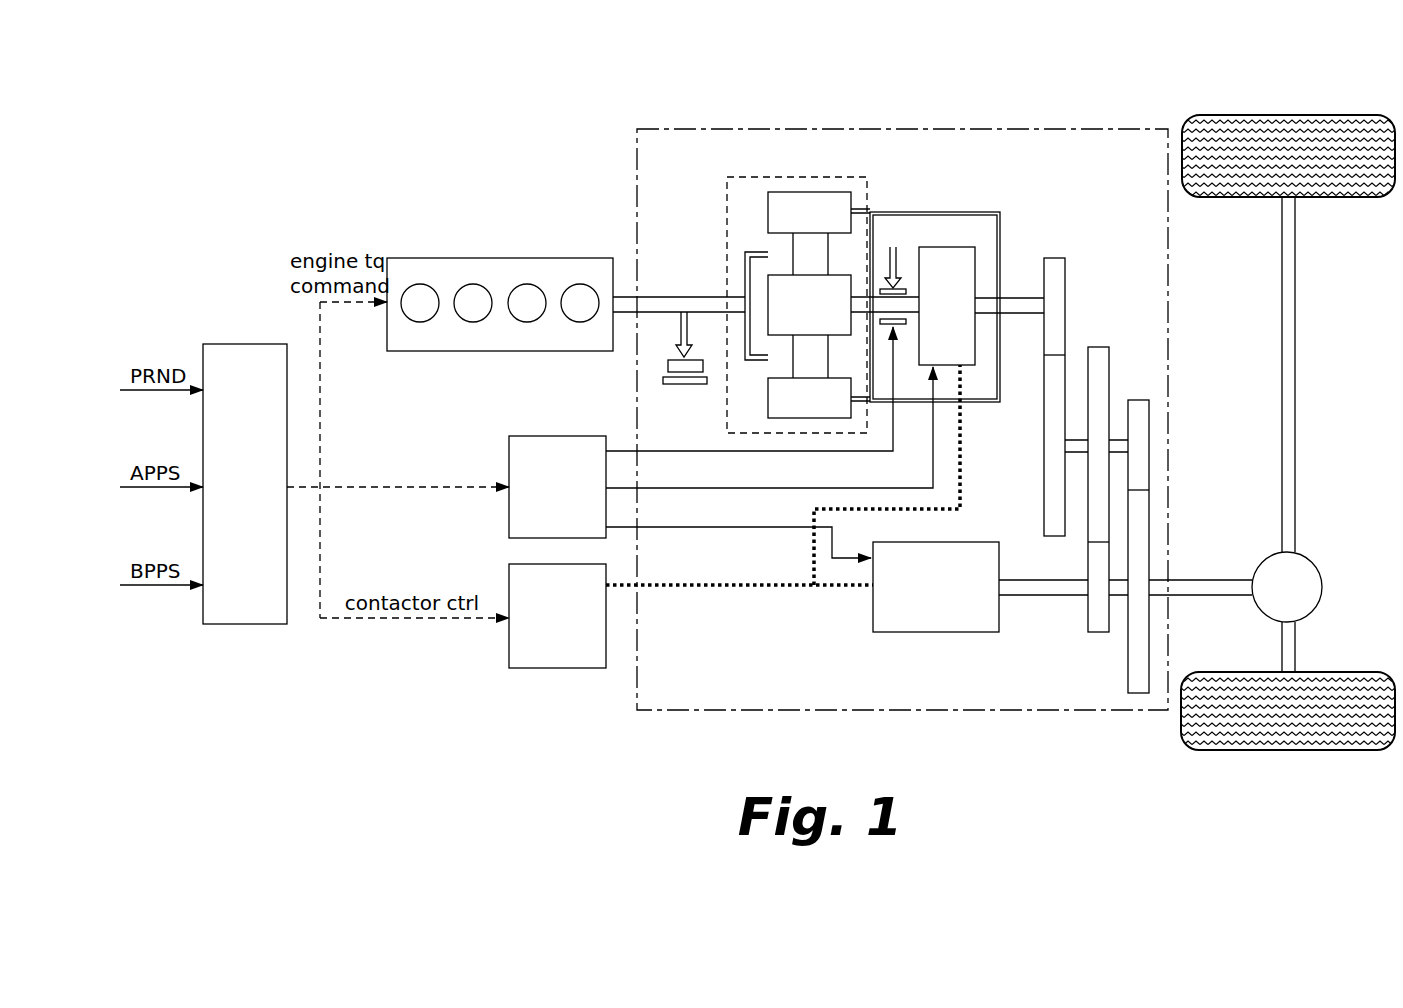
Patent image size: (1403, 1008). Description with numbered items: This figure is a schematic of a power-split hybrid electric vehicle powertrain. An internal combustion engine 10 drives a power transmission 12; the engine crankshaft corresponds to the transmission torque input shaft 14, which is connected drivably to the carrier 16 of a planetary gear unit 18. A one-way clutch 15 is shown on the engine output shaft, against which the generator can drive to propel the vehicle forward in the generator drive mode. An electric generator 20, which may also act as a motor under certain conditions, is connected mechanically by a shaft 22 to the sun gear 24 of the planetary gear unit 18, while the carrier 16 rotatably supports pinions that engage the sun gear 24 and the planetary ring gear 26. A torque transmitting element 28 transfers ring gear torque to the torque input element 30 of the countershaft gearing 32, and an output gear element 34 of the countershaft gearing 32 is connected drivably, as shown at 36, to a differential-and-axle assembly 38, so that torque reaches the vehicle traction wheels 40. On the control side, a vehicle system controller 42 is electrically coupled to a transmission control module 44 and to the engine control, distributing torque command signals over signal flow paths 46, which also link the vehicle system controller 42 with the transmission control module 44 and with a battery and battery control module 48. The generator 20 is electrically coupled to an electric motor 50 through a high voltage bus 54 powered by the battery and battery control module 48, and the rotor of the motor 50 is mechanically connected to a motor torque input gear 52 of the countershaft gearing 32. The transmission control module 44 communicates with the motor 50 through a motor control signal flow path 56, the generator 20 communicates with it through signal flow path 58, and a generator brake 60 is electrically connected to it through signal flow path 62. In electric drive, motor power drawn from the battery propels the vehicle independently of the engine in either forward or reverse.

The internal combustion engine 10 is at (535, 351).
The power transmission 12 is at (1112, 125).
The transmission torque input shaft 14 is at (667, 297).
The one-way clutch 15 is at (668, 366).
The carrier 16 is at (758, 252).
The planetary gear unit 18 is at (865, 176).
The electric generator 20 is at (976, 259).
The shaft 22 is at (860, 318).
The sun gear 24 is at (768, 288).
The planetary ring gear 26 is at (768, 200).
The torque transmitting element 28 is at (985, 402).
The torque input element 30 is at (1066, 288).
The countershaft gearing 32 is at (1120, 438).
The output gear element 34 is at (1128, 655).
The drivable connection 36 is at (1210, 597).
The differential-and-axle assembly 38 is at (1260, 565).
The vehicle traction wheels 40 is at (1290, 115).
The vehicle system controller 42 is at (245, 344).
The transmission control module 44 is at (555, 436).
The signal flow paths 46 is at (390, 492).
The battery and battery control module 48 is at (553, 668).
The electric motor 50 is at (945, 632).
The motor torque input gear 52 is at (1088, 614).
The high voltage bus 54 is at (803, 590).
The motor control signal flow path 56 is at (799, 530).
The signal flow path 58 is at (905, 487).
The generator brake 60 is at (906, 289).
The signal flow path 62 is at (713, 448).